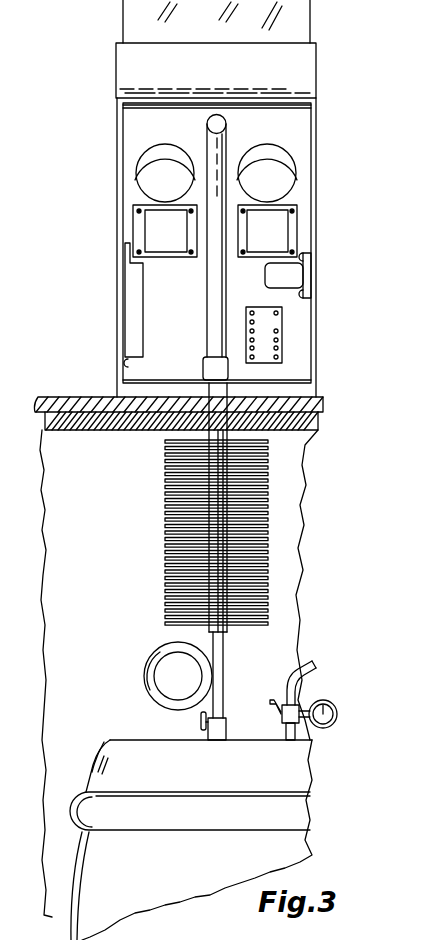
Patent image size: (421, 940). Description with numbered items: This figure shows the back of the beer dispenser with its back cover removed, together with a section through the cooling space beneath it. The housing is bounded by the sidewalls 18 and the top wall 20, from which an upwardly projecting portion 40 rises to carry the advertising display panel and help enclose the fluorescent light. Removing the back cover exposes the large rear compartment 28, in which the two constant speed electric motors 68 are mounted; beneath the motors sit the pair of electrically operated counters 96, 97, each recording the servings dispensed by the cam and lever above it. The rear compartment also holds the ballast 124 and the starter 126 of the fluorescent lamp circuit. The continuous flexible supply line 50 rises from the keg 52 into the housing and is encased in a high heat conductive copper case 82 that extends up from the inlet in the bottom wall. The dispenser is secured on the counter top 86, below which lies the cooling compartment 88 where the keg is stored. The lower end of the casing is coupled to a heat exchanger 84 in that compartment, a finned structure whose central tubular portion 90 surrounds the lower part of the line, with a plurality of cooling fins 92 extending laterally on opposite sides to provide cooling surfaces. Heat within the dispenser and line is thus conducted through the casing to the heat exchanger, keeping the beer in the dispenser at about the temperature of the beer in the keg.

The sidewall 18 is at (118, 161).
The top wall 20 is at (224, 98).
The rear compartment 28 is at (302, 337).
The upwardly projecting portion of the top wall 40 is at (128, 63).
The supply line 50 is at (157, 665).
The keg 52 is at (119, 742).
The electric motor 68 is at (164, 156).
The copper case 82 is at (212, 289).
The heat exchanger 84 is at (177, 532).
The counter top 86 is at (100, 405).
The cooling compartment 88 is at (62, 556).
The central tubular portion 90 is at (230, 633).
The cooling fins 92 is at (167, 553).
The electrically operated counter 96 is at (280, 225).
The electrically operated counter 97 is at (147, 220).
The ballast 124 is at (142, 330).
The starter 126 is at (283, 279).